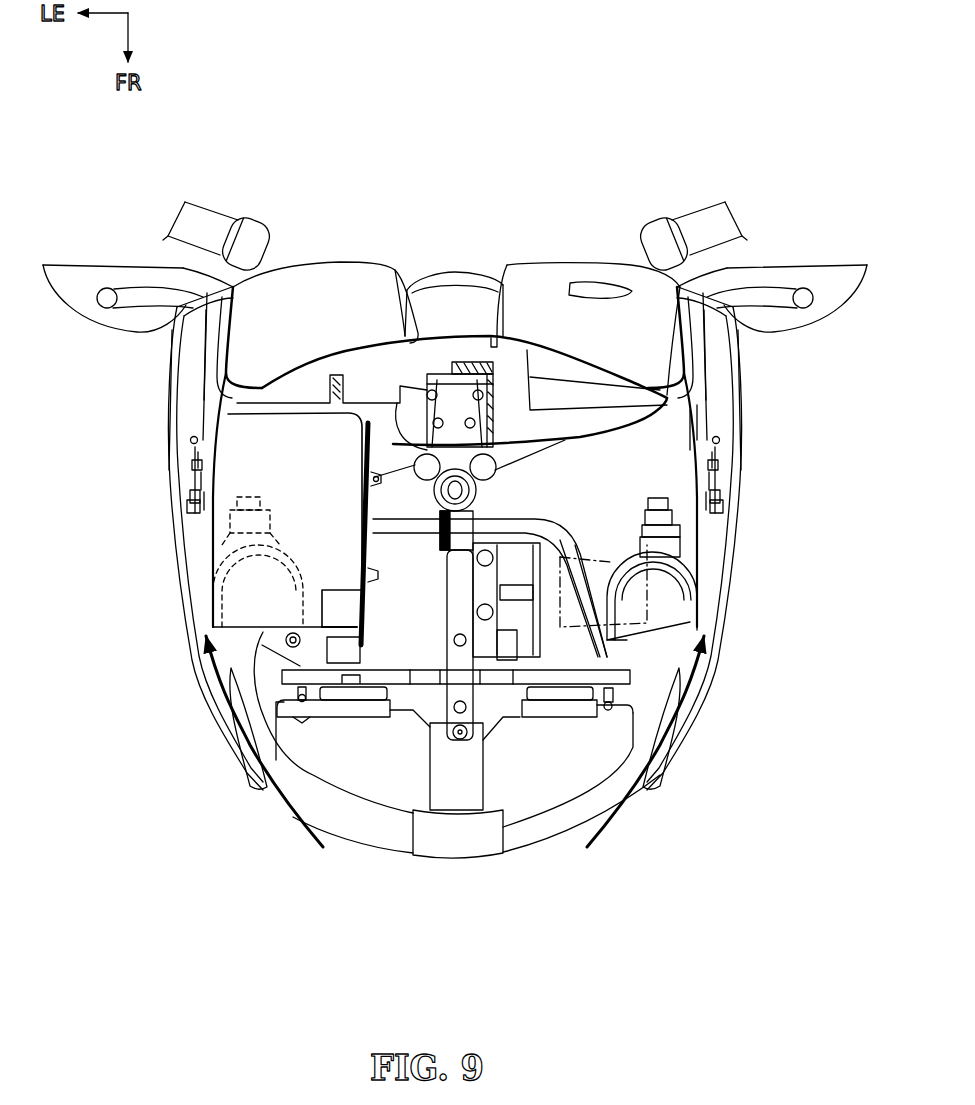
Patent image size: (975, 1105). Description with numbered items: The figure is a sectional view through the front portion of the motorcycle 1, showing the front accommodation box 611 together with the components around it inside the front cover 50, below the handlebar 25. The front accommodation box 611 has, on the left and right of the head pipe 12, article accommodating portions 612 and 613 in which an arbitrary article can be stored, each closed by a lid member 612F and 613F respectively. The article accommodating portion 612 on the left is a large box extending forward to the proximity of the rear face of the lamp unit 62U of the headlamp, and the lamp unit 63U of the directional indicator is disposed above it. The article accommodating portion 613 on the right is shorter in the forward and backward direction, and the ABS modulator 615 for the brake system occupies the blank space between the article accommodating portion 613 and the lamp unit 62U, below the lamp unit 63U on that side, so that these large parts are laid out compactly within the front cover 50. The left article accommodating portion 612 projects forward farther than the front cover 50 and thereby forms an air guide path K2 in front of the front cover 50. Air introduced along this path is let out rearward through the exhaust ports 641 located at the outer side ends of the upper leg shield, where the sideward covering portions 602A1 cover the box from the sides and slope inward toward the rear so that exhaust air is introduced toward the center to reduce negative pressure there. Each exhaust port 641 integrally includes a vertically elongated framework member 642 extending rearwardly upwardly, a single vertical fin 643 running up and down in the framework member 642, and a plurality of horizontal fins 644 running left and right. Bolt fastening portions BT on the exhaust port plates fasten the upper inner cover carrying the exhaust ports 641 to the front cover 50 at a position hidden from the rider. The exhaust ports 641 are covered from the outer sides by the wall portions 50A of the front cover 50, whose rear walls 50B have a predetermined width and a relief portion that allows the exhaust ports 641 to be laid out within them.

The motorcycle 1 is at (440, 52).
The handlebar 25 is at (700, 215).
The front accommodation box 611 is at (586, 247).
The article accommodating portion 612 is at (556, 254).
The lid member 612F is at (541, 280).
The article accommodating portion 613 is at (348, 254).
The lid member 613F is at (376, 290).
The wall portion 50A is at (177, 356).
The rear wall 50B is at (200, 372).
The front cover 50 is at (752, 604).
The sideward covering portion 602A1 is at (215, 432).
The bolt fastening portion BT is at (192, 438).
The exhaust port 641 is at (88, 475).
The framework member 642 is at (196, 454).
The vertical fin 643 is at (200, 474).
The horizontal fin 644 is at (205, 492).
The air guide path K2 is at (200, 582).
The lamp unit 63U is at (290, 552).
The head pipe 12 is at (452, 548).
The ABS modulator 615 is at (717, 608).
The lamp unit 62U is at (557, 854).